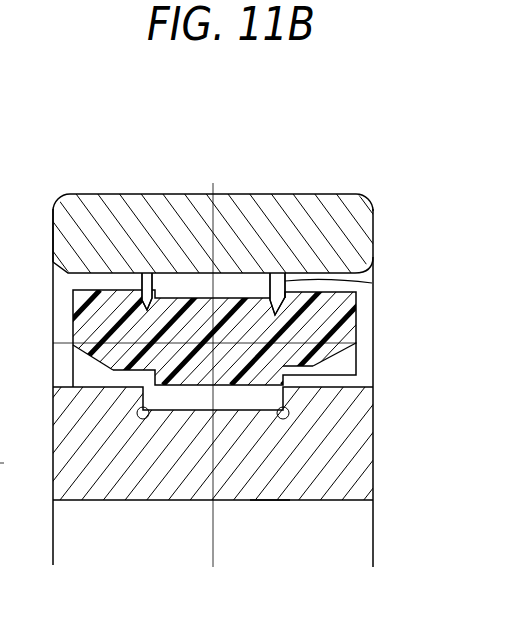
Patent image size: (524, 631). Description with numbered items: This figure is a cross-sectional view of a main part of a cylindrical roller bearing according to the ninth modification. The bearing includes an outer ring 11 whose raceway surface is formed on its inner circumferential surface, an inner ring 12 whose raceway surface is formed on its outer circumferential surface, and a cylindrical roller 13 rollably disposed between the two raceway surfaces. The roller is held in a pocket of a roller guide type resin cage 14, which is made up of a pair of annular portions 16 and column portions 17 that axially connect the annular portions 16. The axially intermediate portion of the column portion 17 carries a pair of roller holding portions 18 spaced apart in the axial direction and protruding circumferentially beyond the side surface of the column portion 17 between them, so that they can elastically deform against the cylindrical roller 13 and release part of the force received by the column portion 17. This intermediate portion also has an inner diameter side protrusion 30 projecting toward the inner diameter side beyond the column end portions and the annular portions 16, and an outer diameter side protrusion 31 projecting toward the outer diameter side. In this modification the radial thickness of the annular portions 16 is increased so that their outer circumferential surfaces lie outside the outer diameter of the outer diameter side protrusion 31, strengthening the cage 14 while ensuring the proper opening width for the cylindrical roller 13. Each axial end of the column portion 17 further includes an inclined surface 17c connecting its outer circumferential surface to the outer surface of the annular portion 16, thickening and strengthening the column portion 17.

The outer ring 11 is at (368, 234).
The inner ring 12 is at (366, 468).
The cylindrical roller 13 is at (360, 287).
The resin cage 14 is at (362, 310).
The annular portion 16 is at (347, 333).
The column portion 17 is at (272, 296).
The inclined surface 17c is at (142, 275).
The roller holding portion 18 is at (70, 332).
The inner diameter side protrusion 30 is at (268, 500).
The outer diameter side protrusion 31 is at (147, 292).